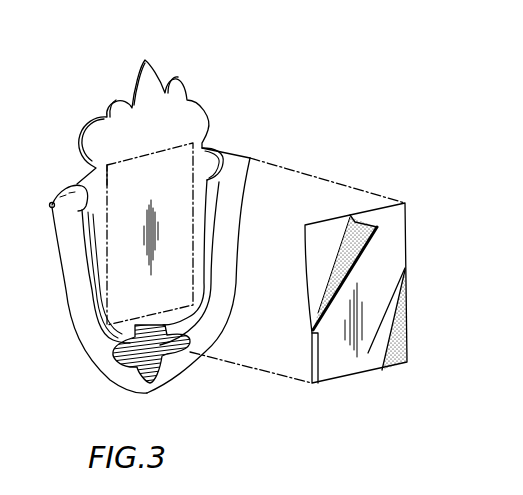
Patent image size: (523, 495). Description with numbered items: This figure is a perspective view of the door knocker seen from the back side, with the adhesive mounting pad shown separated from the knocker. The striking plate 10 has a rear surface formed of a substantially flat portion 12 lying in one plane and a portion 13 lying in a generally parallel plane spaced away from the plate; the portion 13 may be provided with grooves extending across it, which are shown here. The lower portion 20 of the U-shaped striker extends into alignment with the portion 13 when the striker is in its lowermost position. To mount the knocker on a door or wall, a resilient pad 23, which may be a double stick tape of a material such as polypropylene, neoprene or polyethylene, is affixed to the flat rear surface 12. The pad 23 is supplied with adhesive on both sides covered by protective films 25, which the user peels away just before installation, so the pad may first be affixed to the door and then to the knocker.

The striking plate 10 is at (145, 61).
The flat portion 12 is at (180, 118).
The portion 13 is at (157, 373).
The lower portion 20 is at (88, 350).
The resilient pad 23 is at (405, 332).
The protective films 25 is at (322, 230).